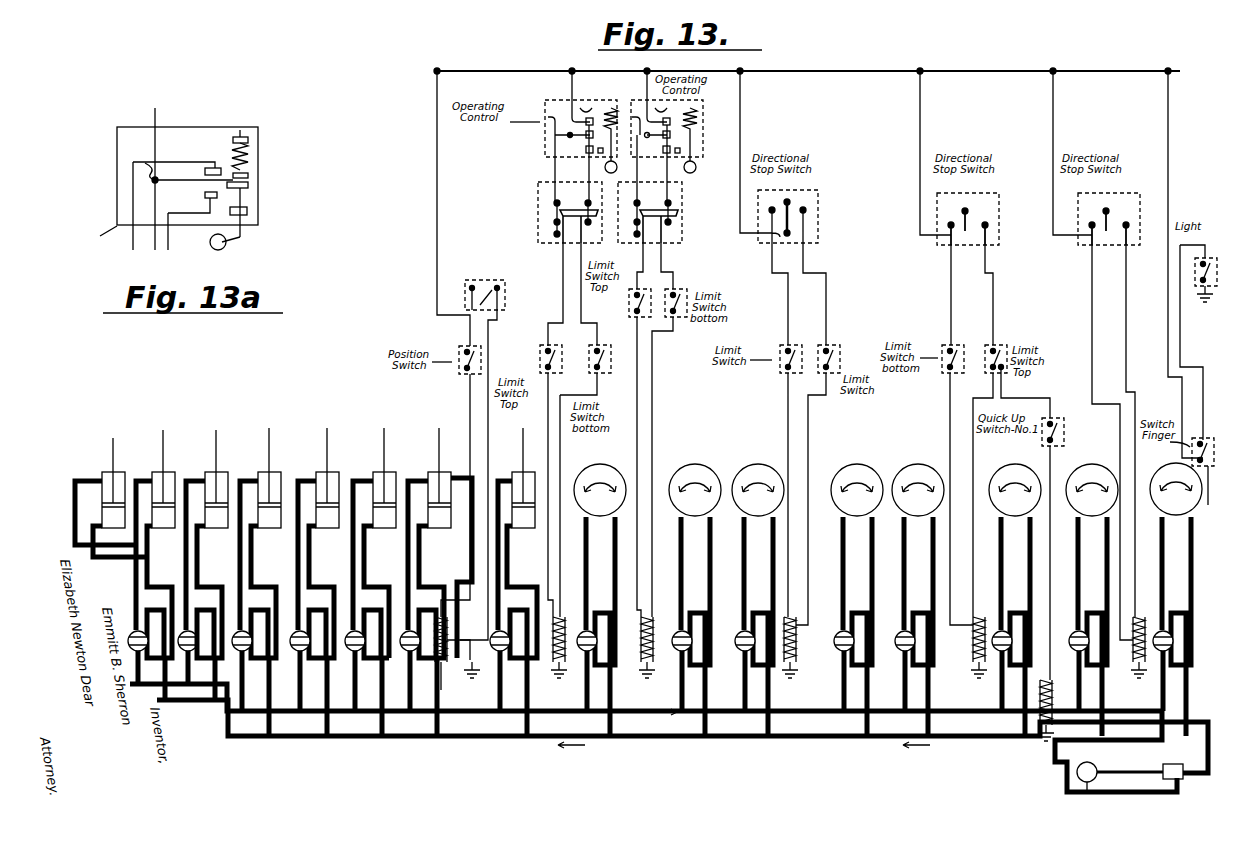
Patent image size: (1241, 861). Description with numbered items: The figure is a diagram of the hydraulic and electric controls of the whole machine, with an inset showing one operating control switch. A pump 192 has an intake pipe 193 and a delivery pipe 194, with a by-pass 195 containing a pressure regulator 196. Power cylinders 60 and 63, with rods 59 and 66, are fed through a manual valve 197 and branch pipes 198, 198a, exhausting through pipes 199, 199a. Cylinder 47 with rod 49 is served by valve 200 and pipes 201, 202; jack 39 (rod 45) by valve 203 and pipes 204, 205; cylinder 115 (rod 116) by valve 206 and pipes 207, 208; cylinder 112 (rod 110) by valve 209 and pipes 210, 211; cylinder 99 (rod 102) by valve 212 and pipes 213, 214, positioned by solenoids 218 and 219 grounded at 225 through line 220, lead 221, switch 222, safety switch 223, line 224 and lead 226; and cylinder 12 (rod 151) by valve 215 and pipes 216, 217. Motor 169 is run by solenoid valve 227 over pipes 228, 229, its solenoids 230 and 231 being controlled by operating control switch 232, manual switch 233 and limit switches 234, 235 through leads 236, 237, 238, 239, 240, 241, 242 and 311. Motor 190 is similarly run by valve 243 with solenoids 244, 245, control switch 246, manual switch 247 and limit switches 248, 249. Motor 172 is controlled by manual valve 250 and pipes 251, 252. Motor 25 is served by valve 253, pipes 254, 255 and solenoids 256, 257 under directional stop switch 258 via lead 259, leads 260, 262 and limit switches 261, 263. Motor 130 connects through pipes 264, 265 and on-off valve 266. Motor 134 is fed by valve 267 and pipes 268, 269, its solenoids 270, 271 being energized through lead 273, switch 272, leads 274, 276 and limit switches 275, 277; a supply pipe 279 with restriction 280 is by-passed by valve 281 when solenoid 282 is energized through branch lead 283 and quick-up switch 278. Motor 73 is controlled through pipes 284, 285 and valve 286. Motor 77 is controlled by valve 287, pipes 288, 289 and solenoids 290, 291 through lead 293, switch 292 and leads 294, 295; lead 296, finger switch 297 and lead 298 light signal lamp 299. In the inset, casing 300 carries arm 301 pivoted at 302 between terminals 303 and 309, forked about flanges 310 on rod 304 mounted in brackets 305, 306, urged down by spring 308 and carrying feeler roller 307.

In FIG. 13A, the casing 300 is at (198, 120).
In FIG. 13A, the switch arm 301 is at (170, 178).
In FIG. 13A, the pivot 302 is at (136, 160).
In FIG. 13A, the terminal 303 is at (209, 154).
In FIG. 13A, the rod 304 is at (250, 193).
In FIG. 13A, the bracket 305 is at (267, 136).
In FIG. 13A, the bracket 306 is at (258, 213).
In FIG. 13A, the feeler roller 307 is at (254, 241).
In FIG. 13, the feeler roller 307 is at (618, 144).
In FIG. 13A, the coil spring 308 is at (257, 151).
In FIG. 13A, the terminal 309 is at (204, 197).
In FIG. 13A, the circular flanges 310 is at (260, 178).
In FIG. 13A, the lead 311 is at (110, 243).
In FIG. 13, the lead 311 is at (555, 138).
In FIG. 13A, the operating control switch 232 is at (90, 231).
In FIG. 13, the operating control switch 232 is at (537, 148).
In FIG. 13A, the lead 237 is at (137, 184).
In FIG. 13, the lead 237 is at (545, 176).
In FIG. 13A, the lead 240 is at (180, 237).
In FIG. 13, the lead 240 is at (574, 164).
In FIG. 13, the line 220 is at (813, 74).
In FIG. 13, the lead 221 is at (436, 221).
In FIG. 13, the manual single-pole double-throw switch 222 is at (508, 291).
In FIG. 13, the on-off single-pole single-throw switch 223 is at (462, 349).
In FIG. 13, the line 224 is at (470, 399).
In FIG. 13, the lead 226 is at (480, 356).
In FIG. 13, the lead 236 is at (570, 99).
In FIG. 13, the manual switch 233 is at (538, 220).
In FIG. 13, the lead 238 is at (563, 305).
In FIG. 13, the lead 241 is at (581, 313).
In FIG. 13, the limit switch 234 is at (555, 351).
In FIG. 13, the limit switch 235 is at (595, 352).
In FIG. 13, the lead 239 is at (563, 390).
In FIG. 13, the lead 242 is at (560, 462).
In FIG. 13, the operating control switch 246 is at (703, 130).
In FIG. 13, the manual switch 247 is at (683, 202).
In FIG. 13, the limit switch 248 is at (644, 280).
In FIG. 13, the limit switch 249 is at (682, 292).
In FIG. 13, the lead 259 is at (743, 129).
In FIG. 13, the manual directional stop switch 258 is at (818, 225).
In FIG. 13, the lead 260 is at (828, 302).
In FIG. 13, the limit switch 261 is at (842, 348).
In FIG. 13, the lead 262 is at (796, 308).
In FIG. 13, the limit switch 263 is at (780, 376).
In FIG. 13, the lead 273 is at (922, 129).
In FIG. 13, the manual two-pole three-position switch 272 is at (1000, 217).
In FIG. 13, the limit switch 275 is at (946, 344).
In FIG. 13, the lead 276 is at (990, 294).
In FIG. 13, the limit switch 277 is at (1008, 350).
In FIG. 13, the lead 274 is at (947, 407).
In FIG. 13, the quick-up switch 278 is at (1057, 418).
In FIG. 13, the branch lead 283 is at (1050, 467).
In FIG. 13, the lead 293 is at (1054, 129).
In FIG. 13, the switch 292 is at (1132, 248).
In FIG. 13, the lead 294 is at (1091, 290).
In FIG. 13, the lead 295 is at (1133, 338).
In FIG. 13, the lead 296 is at (1168, 109).
In FIG. 13, the lead 298 is at (1206, 330).
In FIG. 13, the signal lamp 299 is at (1201, 304).
In FIG. 13, the finger switch 297 is at (1211, 492).
In FIG. 13, the rod 59 is at (110, 446).
In FIG. 13, the power cylinder 60 is at (112, 490).
In FIG. 13, the power cylinder 63 is at (163, 483).
In FIG. 13, the rod 66 is at (175, 461).
In FIG. 13, the hydraulic cylinder 47 is at (218, 470).
In FIG. 13, the rod 49 is at (204, 464).
In FIG. 13, the hydraulic jack 39 is at (270, 470).
In FIG. 13, the piston rod 45 is at (276, 460).
In FIG. 13, the hydraulic power cylinder 115 is at (322, 470).
In FIG. 13, the piston rod 116 is at (342, 461).
In FIG. 13, the power cylinder 112 is at (390, 474).
In FIG. 13, the piston rod 110 is at (392, 461).
In FIG. 13, the power cylinder 99 is at (442, 472).
In FIG. 13, the piston rod 102 is at (439, 459).
In FIG. 13, the hydraulic cylinder 12 is at (515, 472).
In FIG. 13, the piston rod 151 is at (528, 462).
In FIG. 13, the reversible hydraulic motor 169 is at (606, 462).
In FIG. 13, the motor 190 is at (695, 470).
In FIG. 13, the hydraulic motor 172 is at (758, 468).
In FIG. 13, the reversible motor 25 is at (857, 470).
In FIG. 13, the hydraulic motor 130 is at (919, 470).
In FIG. 13, the reversible hydraulic motor 134 is at (1015, 470).
In FIG. 13, the motor 73 is at (1095, 470).
In FIG. 13, the motor 77 is at (1177, 468).
In FIG. 13, the intake pipe 193 is at (1054, 746).
In FIG. 13, the delivery pipe 194 is at (743, 737).
In FIG. 13, the pump 192 is at (1092, 768).
In FIG. 13, the by-pass 195 is at (1112, 782).
In FIG. 13, the pressure regulator 196 is at (1177, 780).
In FIG. 13, the supply pipe 279 is at (1040, 725).
In FIG. 13, the restriction 280 is at (999, 725).
In FIG. 13, the on-off valve 281 is at (1042, 732).
In FIG. 13, the four-way three-position valve 197 is at (130, 628).
In FIG. 13, the branch pipe 198 is at (130, 471).
In FIG. 13, the branch pipe 198a is at (84, 479).
In FIG. 13, the branch pipe 199 is at (142, 549).
In FIG. 13, the branch pipe 199a is at (92, 568).
In FIG. 13, the valve 200 is at (189, 628).
In FIG. 13, the pipe 201 is at (188, 548).
In FIG. 13, the pipe 202 is at (193, 570).
In FIG. 13, the valve 203 is at (245, 628).
In FIG. 13, the pipe 204 is at (240, 480).
In FIG. 13, the pipe 205 is at (248, 551).
In FIG. 13, the valve 206 is at (302, 628).
In FIG. 13, the pipe 207 is at (298, 479).
In FIG. 13, the pipe 208 is at (312, 557).
In FIG. 13, the valve 209 is at (358, 628).
In FIG. 13, the pipe 210 is at (354, 480).
In FIG. 13, the pipe 211 is at (367, 570).
In FIG. 13, the valve 212 is at (413, 628).
In FIG. 13, the pipe 213 is at (365, 548).
In FIG. 13, the pipe 214 is at (422, 558).
In FIG. 13, the valve 215 is at (503, 628).
In FIG. 13, the pipe 216 is at (501, 548).
In FIG. 13, the pipe 217 is at (510, 570).
In FIG. 13, the solenoid 218 is at (450, 624).
In FIG. 13, the solenoid 219 is at (444, 681).
In FIG. 13, the ground 225 is at (477, 682).
In FIG. 13, the solenoid valve 227 is at (585, 628).
In FIG. 13, the pipe 228 is at (590, 556).
In FIG. 13, the pipe 229 is at (618, 562).
In FIG. 13, the solenoid 230 is at (553, 616).
In FIG. 13, the solenoid 231 is at (580, 680).
In FIG. 13, the valve 243 is at (682, 628).
In FIG. 13, the solenoid 244 is at (670, 680).
In FIG. 13, the solenoid 245 is at (647, 616).
In FIG. 13, the manual four-way three-position valve 250 is at (736, 671).
In FIG. 13, the pipe 251 is at (748, 545).
In FIG. 13, the pipe 252 is at (778, 564).
In FIG. 13, the solenoid-operated valve 253 is at (844, 625).
In FIG. 13, the pipe 254 is at (838, 540).
In FIG. 13, the pipe 255 is at (874, 562).
In FIG. 13, the solenoid 256 is at (798, 616).
In FIG. 13, the solenoid 257 is at (817, 678).
In FIG. 13, the pipe 264 is at (908, 569).
In FIG. 13, the pipe 265 is at (936, 588).
In FIG. 13, the manual two-way two-position valve 266 is at (900, 650).
In FIG. 13, the four-way three-position valve 267 is at (1002, 660).
In FIG. 13, the pipe 268 is at (1001, 563).
In FIG. 13, the pipe 269 is at (1034, 582).
In FIG. 13, the solenoid 270 is at (974, 616).
In FIG. 13, the solenoid 271 is at (976, 678).
In FIG. 13, the solenoid 282 is at (1056, 682).
In FIG. 13, the pipe 284 is at (1074, 540).
In FIG. 13, the pipe 285 is at (1110, 562).
In FIG. 13, the manual two-way two-position valve 286 is at (1079, 625).
In FIG. 13, the solenoid-operated four-way three-position valve 287 is at (1163, 625).
In FIG. 13, the pipe 288 is at (1193, 562).
In FIG. 13, the pipe 289 is at (1156, 540).
In FIG. 13, the solenoid 290 is at (1156, 678).
In FIG. 13, the solenoid 291 is at (1135, 616).